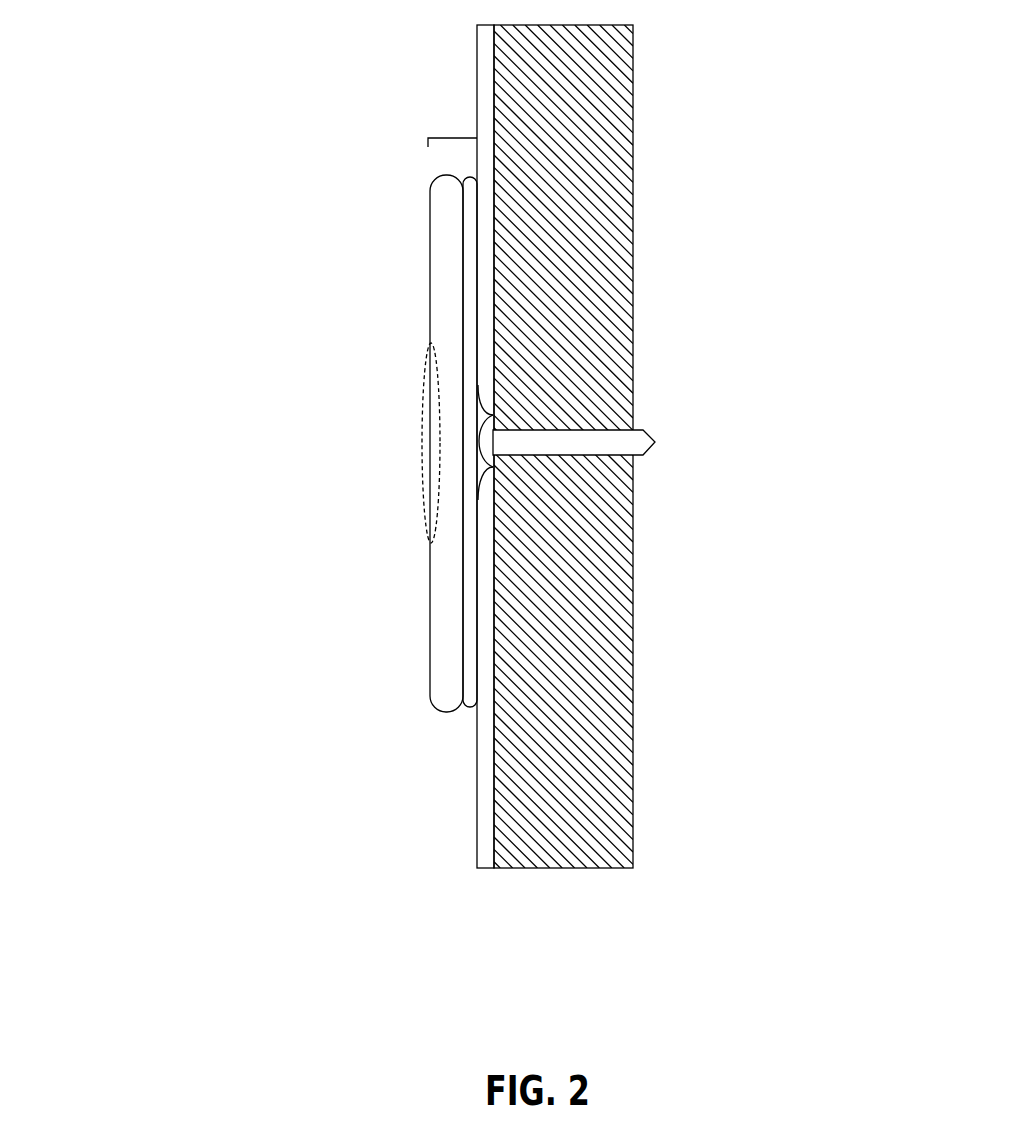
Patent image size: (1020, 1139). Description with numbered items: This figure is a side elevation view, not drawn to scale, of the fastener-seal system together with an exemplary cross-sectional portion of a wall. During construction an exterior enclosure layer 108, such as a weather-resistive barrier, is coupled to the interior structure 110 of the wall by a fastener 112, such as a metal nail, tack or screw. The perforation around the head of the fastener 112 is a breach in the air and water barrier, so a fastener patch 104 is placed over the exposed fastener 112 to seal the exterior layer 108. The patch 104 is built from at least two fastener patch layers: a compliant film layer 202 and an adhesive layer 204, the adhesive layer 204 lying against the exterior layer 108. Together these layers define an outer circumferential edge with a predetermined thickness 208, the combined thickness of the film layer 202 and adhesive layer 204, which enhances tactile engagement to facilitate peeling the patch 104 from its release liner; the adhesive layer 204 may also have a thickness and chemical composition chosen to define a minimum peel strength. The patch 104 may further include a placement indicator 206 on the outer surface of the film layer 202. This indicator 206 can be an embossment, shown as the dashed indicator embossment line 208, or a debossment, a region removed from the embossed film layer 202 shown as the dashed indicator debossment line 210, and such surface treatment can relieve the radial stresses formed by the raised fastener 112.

The fastener patch 104 is at (295, 508).
The exterior enclosure layer 108 is at (477, 870).
The interior structure 110 is at (607, 200).
The fastener 112 is at (485, 440).
The film layer 202 is at (448, 278).
The adhesive layer 204 is at (466, 730).
The placement indicator 206 is at (423, 457).
The predetermined thickness 208 is at (182, 482).
The indicator debossment line 210 is at (437, 443).